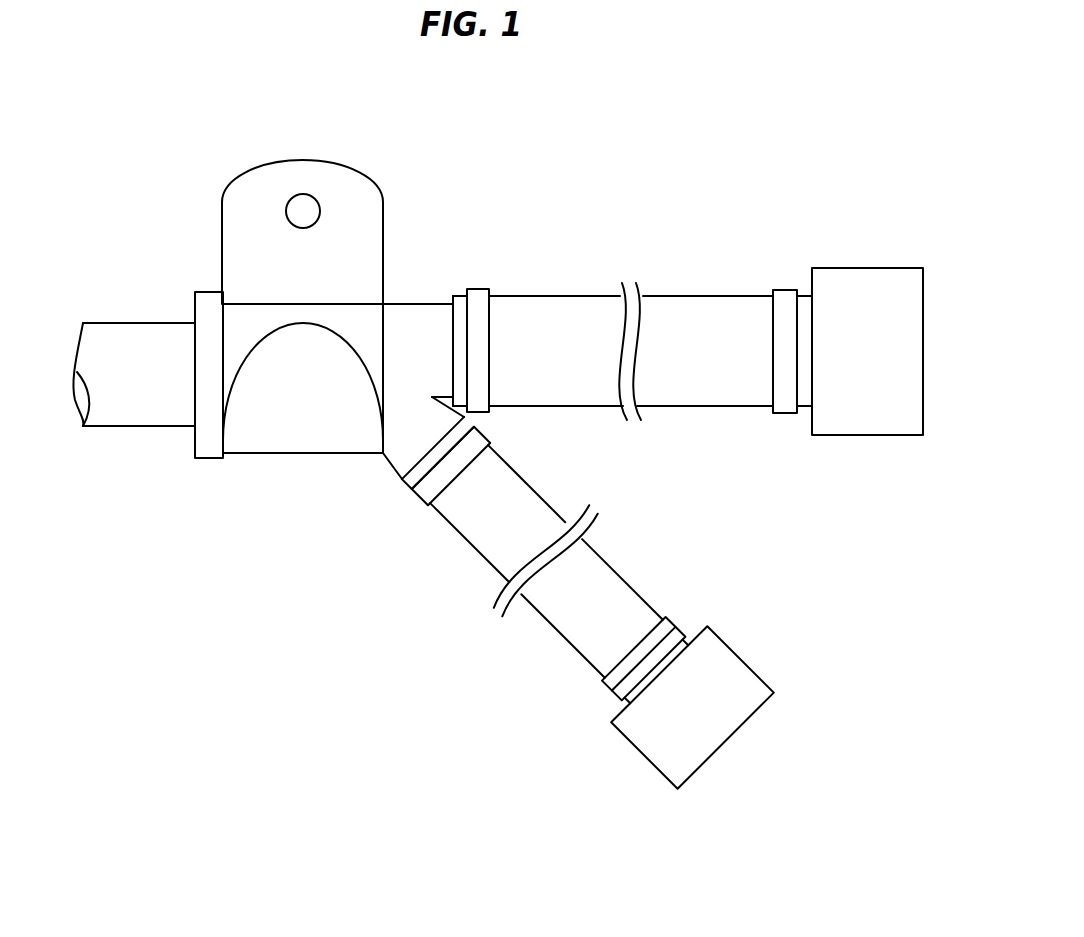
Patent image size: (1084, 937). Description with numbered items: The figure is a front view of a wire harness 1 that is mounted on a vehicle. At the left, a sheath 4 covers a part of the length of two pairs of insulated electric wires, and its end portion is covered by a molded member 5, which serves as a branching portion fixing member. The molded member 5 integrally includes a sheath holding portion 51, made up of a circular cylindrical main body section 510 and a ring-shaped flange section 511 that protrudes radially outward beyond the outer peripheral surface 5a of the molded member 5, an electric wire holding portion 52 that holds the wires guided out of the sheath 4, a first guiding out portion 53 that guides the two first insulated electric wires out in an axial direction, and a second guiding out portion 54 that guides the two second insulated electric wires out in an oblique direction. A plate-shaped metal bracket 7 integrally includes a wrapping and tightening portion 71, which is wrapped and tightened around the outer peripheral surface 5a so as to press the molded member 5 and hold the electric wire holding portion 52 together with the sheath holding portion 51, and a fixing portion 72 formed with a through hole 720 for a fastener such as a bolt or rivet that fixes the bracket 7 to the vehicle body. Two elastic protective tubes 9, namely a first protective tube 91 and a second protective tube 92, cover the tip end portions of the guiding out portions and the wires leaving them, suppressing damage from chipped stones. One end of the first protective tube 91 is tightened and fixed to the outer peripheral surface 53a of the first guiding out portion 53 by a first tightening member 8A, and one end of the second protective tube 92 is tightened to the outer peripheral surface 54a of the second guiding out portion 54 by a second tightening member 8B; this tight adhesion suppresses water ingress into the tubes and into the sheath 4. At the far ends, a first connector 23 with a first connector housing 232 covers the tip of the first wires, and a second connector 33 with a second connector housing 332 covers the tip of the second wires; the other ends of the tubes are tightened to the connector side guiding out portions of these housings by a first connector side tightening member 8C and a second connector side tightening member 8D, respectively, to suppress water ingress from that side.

The wire harness 1 is at (647, 163).
The sheath 4 is at (137, 420).
The molded member 5 is at (398, 293).
The outer peripheral surface of the molded member 5a is at (304, 303).
The bracket 7 is at (301, 158).
The wrapping and tightening portion 71 is at (294, 438).
The fixing portion 72 is at (365, 192).
The through hole 720 is at (308, 193).
The sheath holding portion 51 is at (120, 253).
The main body section 510 is at (242, 318).
The flange section 511 is at (200, 307).
The electric wire holding portion 52 is at (372, 322).
The first guiding out portion 53 is at (412, 312).
The outer peripheral surface of the first guiding out portion 53a is at (440, 306).
The second guiding out portion 54 is at (397, 447).
The outer peripheral surface of the second guiding out portion 54a is at (398, 467).
The first tightening member 8A is at (482, 296).
The second tightening member 8B is at (417, 503).
The first connector side tightening member 8C is at (786, 297).
The second connector side tightening member 8D is at (605, 680).
The elastic protective tubes 9 is at (693, 285).
The first protective tube 91 is at (723, 398).
The second protective tube 92 is at (560, 632).
The first connector 23 is at (898, 260).
The first connector housing 232 is at (868, 427).
The second connector 33 is at (751, 654).
The second connector housing 332 is at (725, 728).